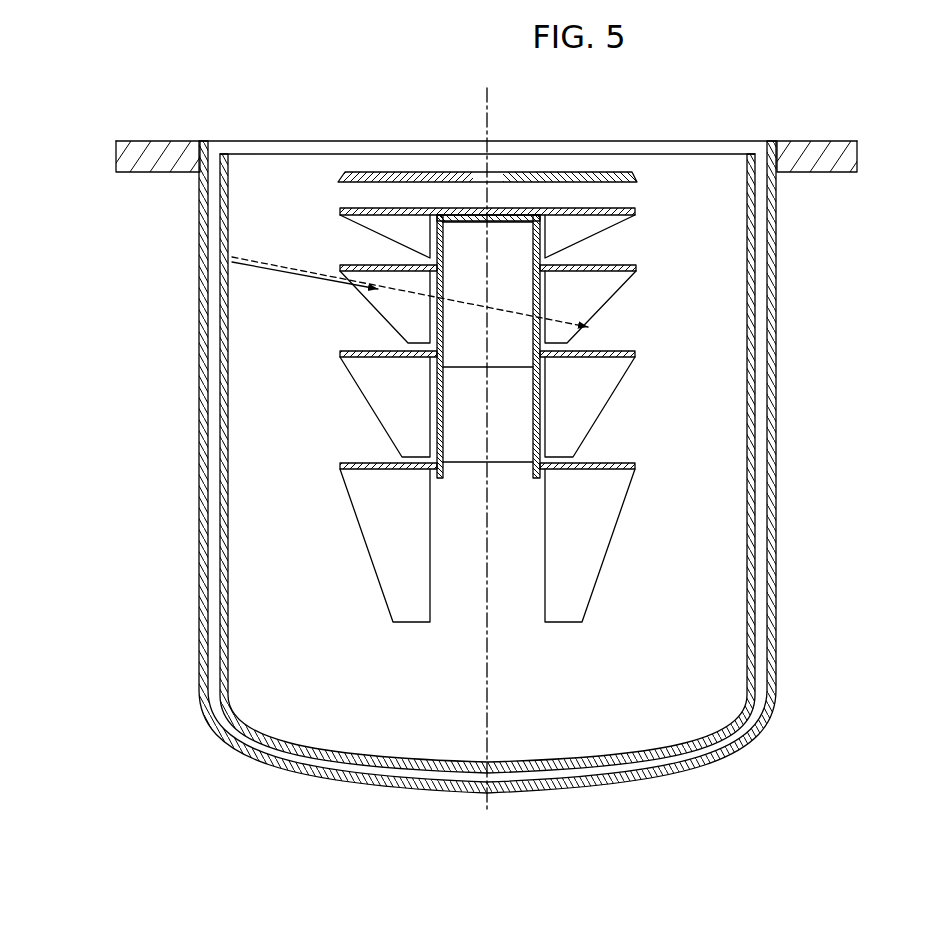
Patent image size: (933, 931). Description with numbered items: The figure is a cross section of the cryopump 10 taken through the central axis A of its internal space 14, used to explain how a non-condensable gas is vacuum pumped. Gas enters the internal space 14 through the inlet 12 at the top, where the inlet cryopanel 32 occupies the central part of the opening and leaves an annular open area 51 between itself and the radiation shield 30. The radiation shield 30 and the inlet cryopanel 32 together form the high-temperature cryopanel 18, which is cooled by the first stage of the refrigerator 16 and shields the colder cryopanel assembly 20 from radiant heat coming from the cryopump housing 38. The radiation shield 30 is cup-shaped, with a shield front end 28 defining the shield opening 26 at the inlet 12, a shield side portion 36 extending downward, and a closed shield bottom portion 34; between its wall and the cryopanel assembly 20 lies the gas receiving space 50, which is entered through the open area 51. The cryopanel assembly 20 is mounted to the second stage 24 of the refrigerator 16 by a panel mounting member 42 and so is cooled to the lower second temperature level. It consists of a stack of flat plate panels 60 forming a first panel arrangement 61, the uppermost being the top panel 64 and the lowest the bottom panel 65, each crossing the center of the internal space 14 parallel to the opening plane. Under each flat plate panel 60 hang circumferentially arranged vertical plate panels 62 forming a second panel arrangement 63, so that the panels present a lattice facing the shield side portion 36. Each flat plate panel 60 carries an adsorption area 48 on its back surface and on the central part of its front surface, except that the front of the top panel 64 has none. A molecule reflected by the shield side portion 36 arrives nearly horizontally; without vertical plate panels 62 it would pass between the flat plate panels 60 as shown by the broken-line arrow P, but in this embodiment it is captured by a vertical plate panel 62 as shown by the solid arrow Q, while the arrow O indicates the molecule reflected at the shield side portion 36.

The cryopump 10 is at (95, 114).
The inlet 12 is at (490, 118).
The internal space 14 is at (517, 474).
The refrigerator 16 is at (464, 470).
The high-temperature cryopanel 18 is at (607, 207).
The cryopanel assembly 20 is at (387, 636).
The second stage 24 is at (488, 379).
The shield opening 26 is at (644, 138).
The shield front end 28 is at (757, 152).
The radiation shield 30 is at (757, 215).
The inlet cryopanel 32 is at (637, 184).
The shield bottom portion 34 is at (685, 740).
The shield side portion 36 is at (757, 580).
The cryopump housing 38 is at (777, 685).
The panel mounting member 42 is at (538, 479).
The adsorption area 48 is at (517, 172).
The gas receiving space 50 is at (705, 398).
The open area 51 is at (688, 170).
The flat plate panel 60 is at (608, 417).
The first panel arrangement 61 is at (663, 195).
The vertical plate panel 62 is at (620, 224).
The second panel arrangement 63 is at (598, 246).
The top panel 64 is at (635, 212).
The bottom panel 65 is at (636, 468).
The central axis A is at (487, 93).
The flow direction O is at (238, 251).
The broken-line arrow P is at (316, 271).
The solid arrow Q is at (298, 274).